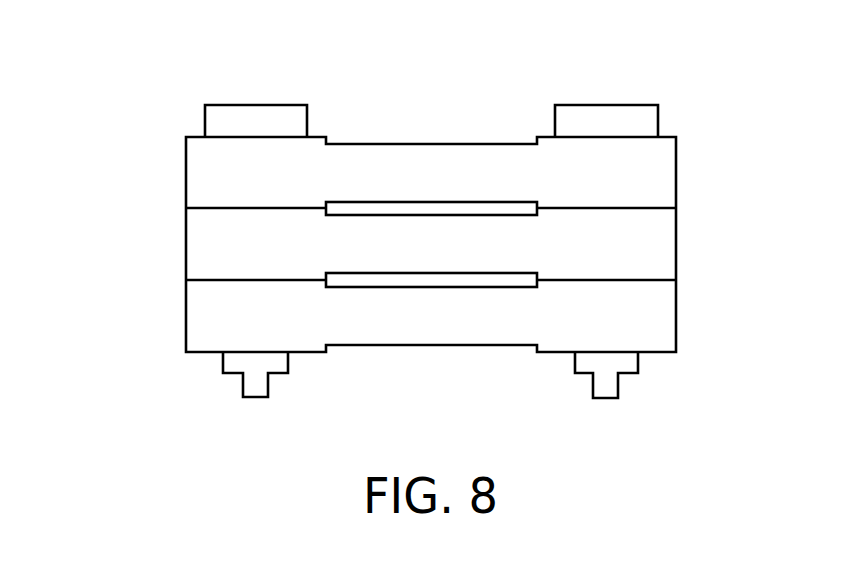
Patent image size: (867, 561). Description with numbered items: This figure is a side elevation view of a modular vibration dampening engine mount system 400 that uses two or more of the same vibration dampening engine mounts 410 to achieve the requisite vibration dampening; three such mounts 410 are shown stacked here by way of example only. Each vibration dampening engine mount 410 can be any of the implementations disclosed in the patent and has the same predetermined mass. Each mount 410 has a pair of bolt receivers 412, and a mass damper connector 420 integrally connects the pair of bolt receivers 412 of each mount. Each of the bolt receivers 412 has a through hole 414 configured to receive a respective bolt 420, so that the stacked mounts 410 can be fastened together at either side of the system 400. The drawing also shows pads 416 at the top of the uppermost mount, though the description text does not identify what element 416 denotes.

The modular vibration dampening engine mount system 400 is at (121, 47).
The vibration dampening engine mount 410 is at (689, 156).
The bolt receiver 412 is at (195, 316).
The through hole 414 is at (602, 417).
The top contact pad 416 is at (608, 105).
The mass damper connector 420 is at (355, 385).